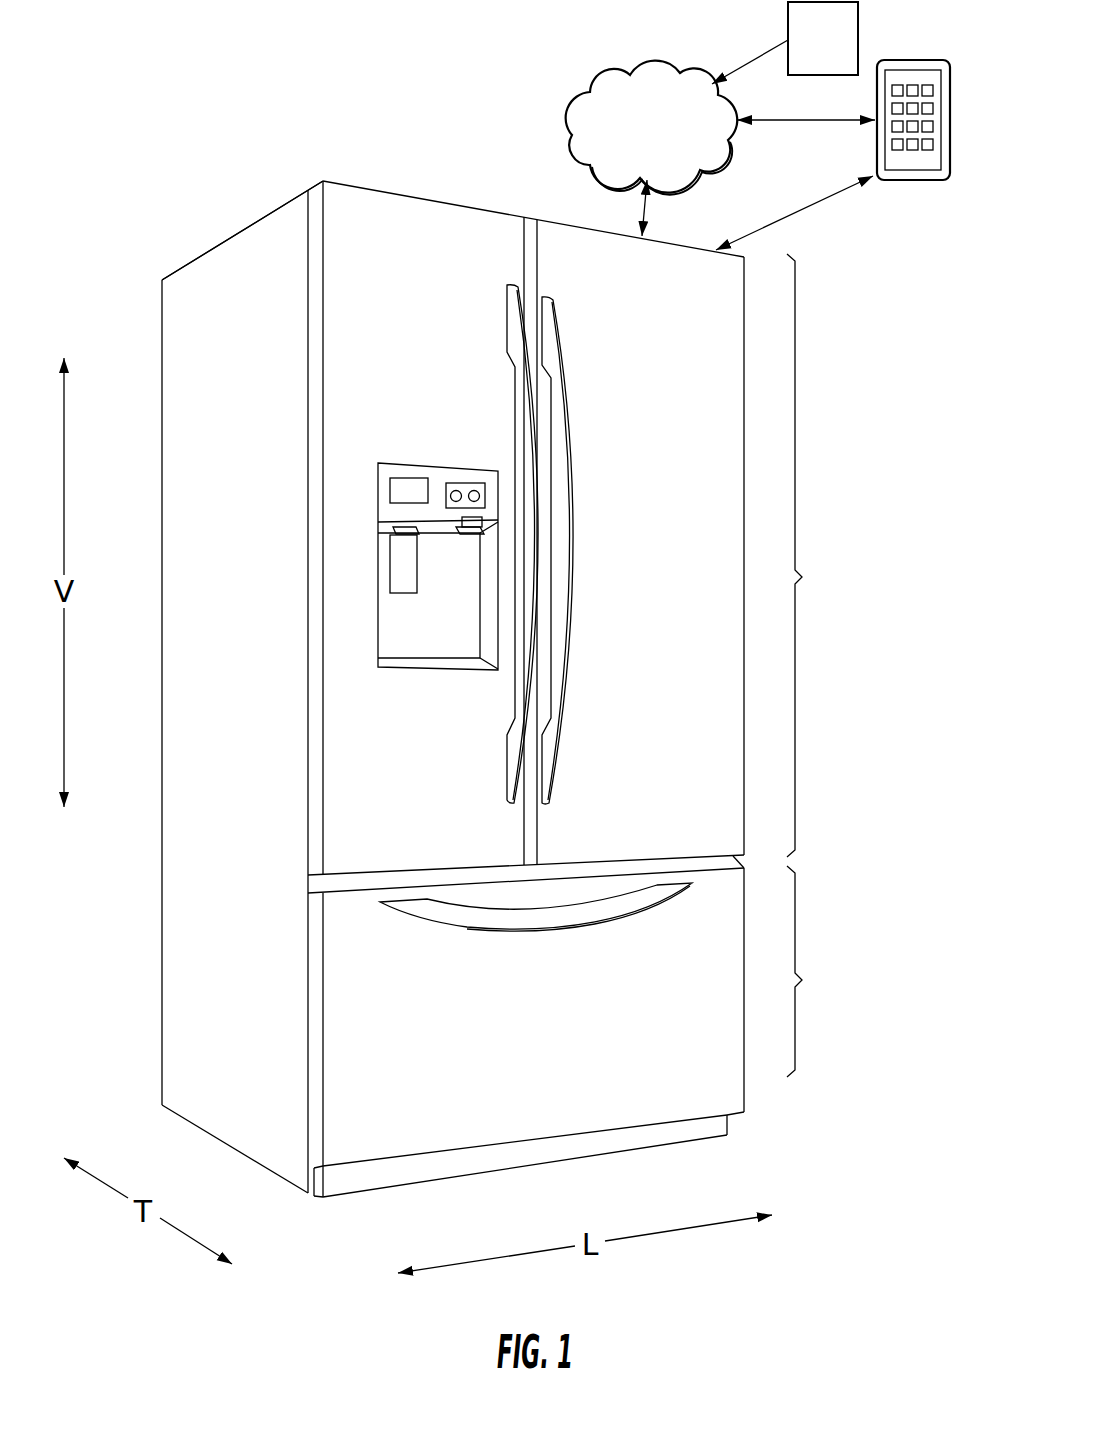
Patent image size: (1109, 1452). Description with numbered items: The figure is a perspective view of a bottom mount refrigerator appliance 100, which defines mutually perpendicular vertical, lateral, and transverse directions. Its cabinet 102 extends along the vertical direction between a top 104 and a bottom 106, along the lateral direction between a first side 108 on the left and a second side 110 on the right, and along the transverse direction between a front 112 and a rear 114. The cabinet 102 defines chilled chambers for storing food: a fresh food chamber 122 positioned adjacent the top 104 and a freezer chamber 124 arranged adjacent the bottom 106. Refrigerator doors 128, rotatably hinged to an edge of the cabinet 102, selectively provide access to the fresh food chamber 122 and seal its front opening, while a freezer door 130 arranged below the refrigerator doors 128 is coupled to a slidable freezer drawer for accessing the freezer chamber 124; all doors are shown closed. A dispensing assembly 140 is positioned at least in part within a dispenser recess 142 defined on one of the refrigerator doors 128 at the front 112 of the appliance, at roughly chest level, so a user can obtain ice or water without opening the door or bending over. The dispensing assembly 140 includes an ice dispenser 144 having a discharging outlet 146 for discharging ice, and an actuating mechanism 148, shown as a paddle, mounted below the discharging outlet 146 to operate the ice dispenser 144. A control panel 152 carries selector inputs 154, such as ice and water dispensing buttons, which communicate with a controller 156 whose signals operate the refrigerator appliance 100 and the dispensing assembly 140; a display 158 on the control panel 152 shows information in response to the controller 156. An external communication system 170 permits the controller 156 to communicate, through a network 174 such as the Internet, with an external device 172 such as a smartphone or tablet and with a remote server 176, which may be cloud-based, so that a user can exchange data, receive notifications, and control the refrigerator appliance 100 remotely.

The refrigerator appliance 100 is at (444, 689).
The cabinet 102 is at (439, 743).
The top 104 is at (160, 278).
The bottom 106 is at (152, 1101).
The first side 108 is at (321, 1204).
The second side 110 is at (729, 1139).
The front 112 is at (304, 1199).
The rear 114 is at (163, 1112).
The fresh food chamber 122 is at (817, 555).
The freezer chamber 124 is at (817, 971).
The refrigerator doors 128 is at (412, 325).
The freezer door 130 is at (546, 1019).
The dispensing assembly 140 is at (438, 545).
The dispenser recess 142 is at (446, 662).
The ice dispenser 144 is at (384, 594).
The discharging outlet 146 is at (402, 537).
The actuating mechanism 148 is at (408, 582).
The control panel 152 is at (375, 488).
The selector inputs 154 is at (458, 493).
The controller 156 is at (491, 495).
The display 158 is at (411, 491).
The external communication system 170 is at (720, 126).
The external device 172 is at (913, 182).
The network 174 is at (633, 138).
The remote server 176 is at (804, 55).